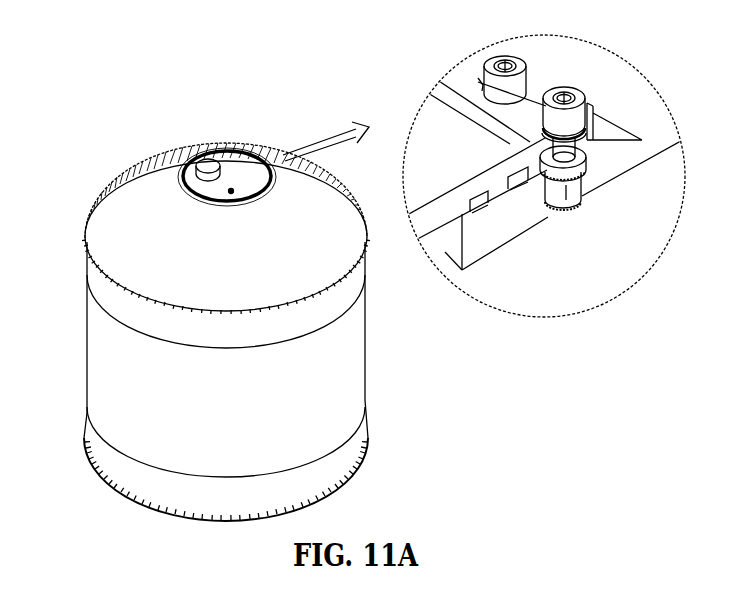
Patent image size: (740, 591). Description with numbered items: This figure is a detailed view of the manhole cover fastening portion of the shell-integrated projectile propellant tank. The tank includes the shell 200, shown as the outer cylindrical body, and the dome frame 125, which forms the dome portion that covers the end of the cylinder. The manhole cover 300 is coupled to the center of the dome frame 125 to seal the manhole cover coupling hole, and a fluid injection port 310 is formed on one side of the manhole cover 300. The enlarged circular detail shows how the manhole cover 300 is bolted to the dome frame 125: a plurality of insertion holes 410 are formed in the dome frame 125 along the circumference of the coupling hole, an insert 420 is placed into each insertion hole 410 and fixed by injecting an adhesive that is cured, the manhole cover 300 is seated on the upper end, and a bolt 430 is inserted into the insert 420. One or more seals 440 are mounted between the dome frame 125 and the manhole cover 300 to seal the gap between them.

The dome frame 125 is at (140, 202).
The shell 200 is at (350, 402).
The manhole cover 300 is at (240, 168).
The fluid injection port 310 is at (203, 166).
The insertion hole 410 is at (550, 222).
The insert 420 is at (568, 187).
The bolt 430 is at (580, 100).
The seal 440 is at (477, 205).